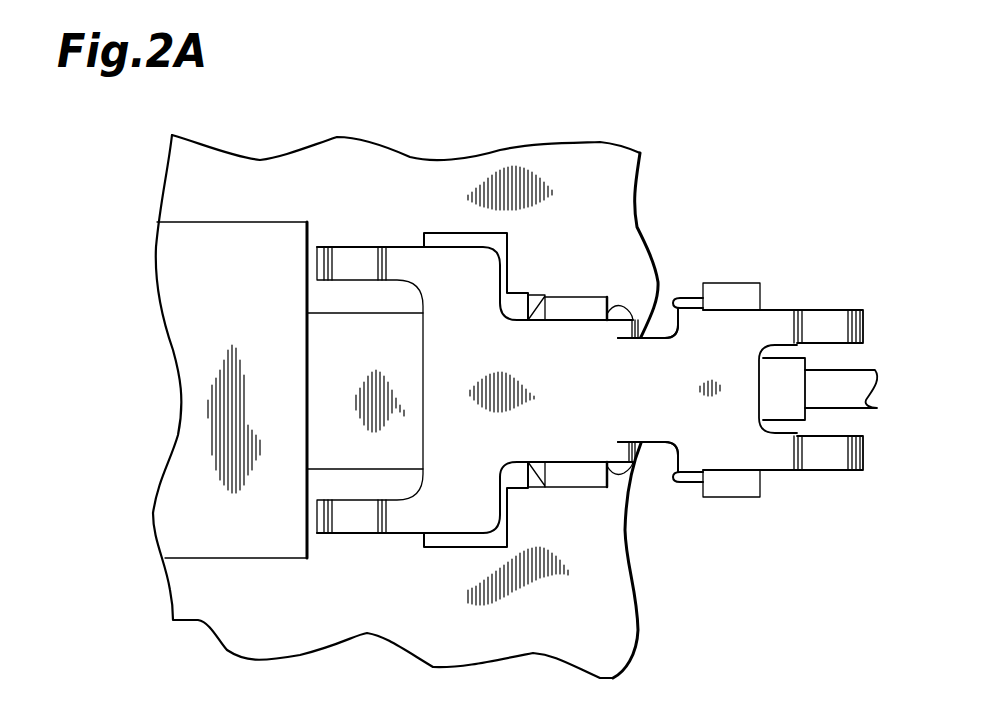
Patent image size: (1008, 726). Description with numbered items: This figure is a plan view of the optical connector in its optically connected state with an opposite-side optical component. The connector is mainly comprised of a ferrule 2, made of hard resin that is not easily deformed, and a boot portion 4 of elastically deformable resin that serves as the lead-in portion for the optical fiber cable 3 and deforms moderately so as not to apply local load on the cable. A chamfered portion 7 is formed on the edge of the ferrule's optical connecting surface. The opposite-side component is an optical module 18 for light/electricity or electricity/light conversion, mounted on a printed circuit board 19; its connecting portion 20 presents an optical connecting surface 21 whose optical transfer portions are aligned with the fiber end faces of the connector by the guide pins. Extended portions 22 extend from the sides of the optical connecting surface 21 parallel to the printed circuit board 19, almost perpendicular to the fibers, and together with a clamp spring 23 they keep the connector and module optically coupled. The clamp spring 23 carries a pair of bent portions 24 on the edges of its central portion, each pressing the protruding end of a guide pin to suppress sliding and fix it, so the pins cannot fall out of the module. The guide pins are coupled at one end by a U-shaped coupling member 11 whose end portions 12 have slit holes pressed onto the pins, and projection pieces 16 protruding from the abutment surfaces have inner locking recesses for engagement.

The ferrule 2 is at (593, 470).
The optical fiber cable 3 is at (847, 373).
The boot portion 4 is at (783, 385).
The chamfered portion 7 is at (532, 468).
The coupling member 11 is at (630, 514).
The end portions 12 is at (648, 390).
The projection pieces 16 is at (687, 474).
The optical module 18 is at (267, 247).
The printed circuit board 19 is at (607, 632).
The connecting portion 20 is at (357, 437).
The optical connecting surface 21 is at (528, 307).
The extended portions 22 is at (465, 237).
The clamp spring 23 is at (577, 340).
The bent portions 24 is at (660, 297).